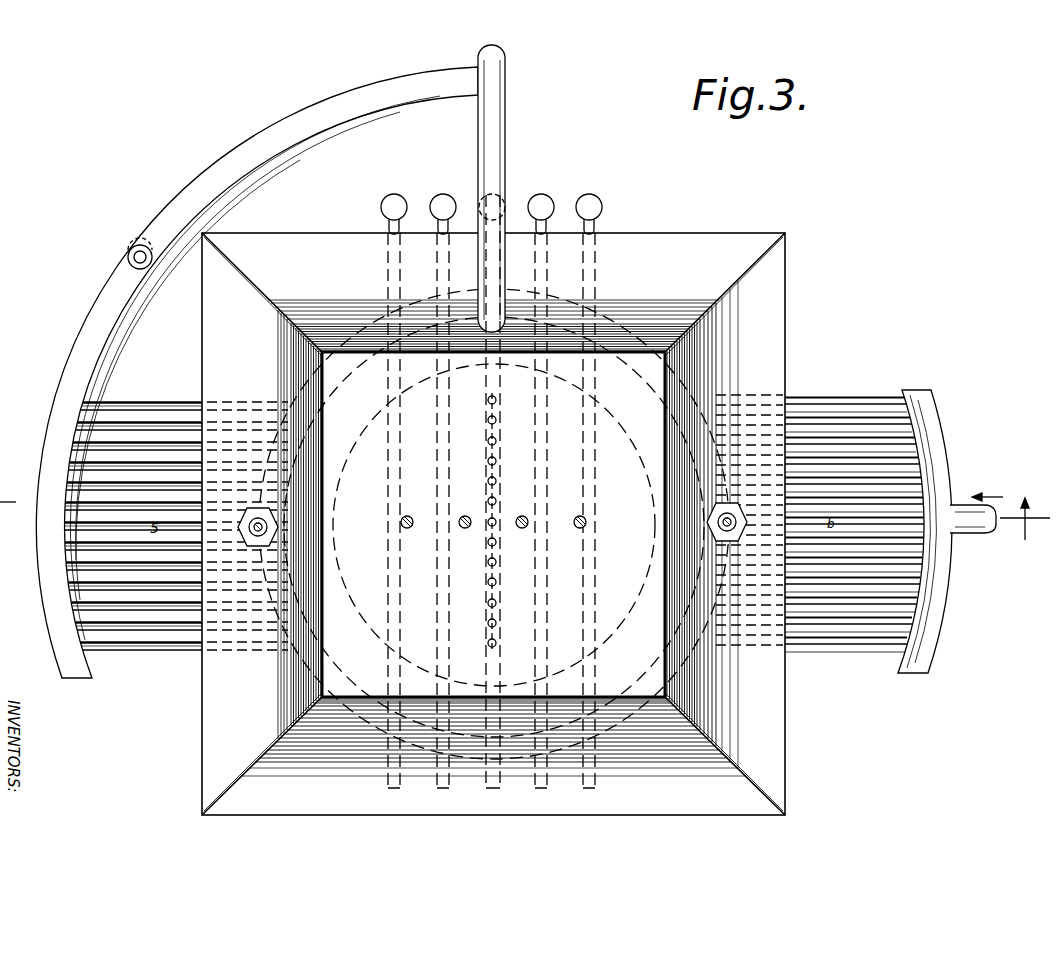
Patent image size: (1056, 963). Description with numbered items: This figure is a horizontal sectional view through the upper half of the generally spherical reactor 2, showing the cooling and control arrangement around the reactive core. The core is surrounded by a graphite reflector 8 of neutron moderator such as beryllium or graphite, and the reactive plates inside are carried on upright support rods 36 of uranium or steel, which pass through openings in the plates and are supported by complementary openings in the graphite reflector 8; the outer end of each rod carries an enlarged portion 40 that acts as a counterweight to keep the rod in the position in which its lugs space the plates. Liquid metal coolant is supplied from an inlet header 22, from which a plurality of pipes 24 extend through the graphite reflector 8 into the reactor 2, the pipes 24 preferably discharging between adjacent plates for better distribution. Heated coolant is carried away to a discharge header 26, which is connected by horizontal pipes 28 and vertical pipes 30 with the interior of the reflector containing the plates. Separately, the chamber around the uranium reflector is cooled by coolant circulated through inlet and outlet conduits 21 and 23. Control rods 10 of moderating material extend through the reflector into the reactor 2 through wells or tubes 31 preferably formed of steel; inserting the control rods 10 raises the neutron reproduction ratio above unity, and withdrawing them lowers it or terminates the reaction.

The reactor 2 is at (525, 533).
The graphite reflector 8 is at (712, 245).
The control rods 10 is at (258, 548).
The inlet conduit 21 is at (890, 523).
The inlet header 22 is at (943, 458).
The outlet conduit 23 is at (173, 525).
The pipes 24 is at (840, 420).
The discharge header 26 is at (186, 192).
The horizontal pipes 28 is at (130, 425).
The vertical pipes 30 is at (497, 503).
The wells or tubes 31 is at (275, 527).
The support rods 36 is at (381, 208).
The enlarged portion 40 is at (441, 195).